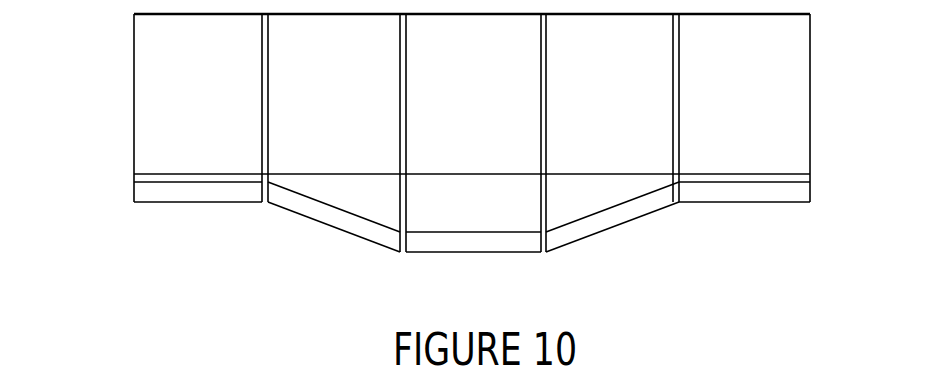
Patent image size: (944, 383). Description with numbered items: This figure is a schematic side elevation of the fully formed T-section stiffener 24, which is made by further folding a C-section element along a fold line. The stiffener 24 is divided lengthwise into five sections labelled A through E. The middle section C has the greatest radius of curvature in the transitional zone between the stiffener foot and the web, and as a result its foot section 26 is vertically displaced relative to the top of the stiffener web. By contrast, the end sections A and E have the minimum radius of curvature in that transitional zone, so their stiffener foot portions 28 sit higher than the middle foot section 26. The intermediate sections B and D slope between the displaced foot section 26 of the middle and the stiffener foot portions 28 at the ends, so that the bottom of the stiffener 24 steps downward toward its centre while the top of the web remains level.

The stiffener 24 is at (110, 97).
The foot section 26 is at (474, 245).
The stiffener foot portions 28 is at (199, 195).